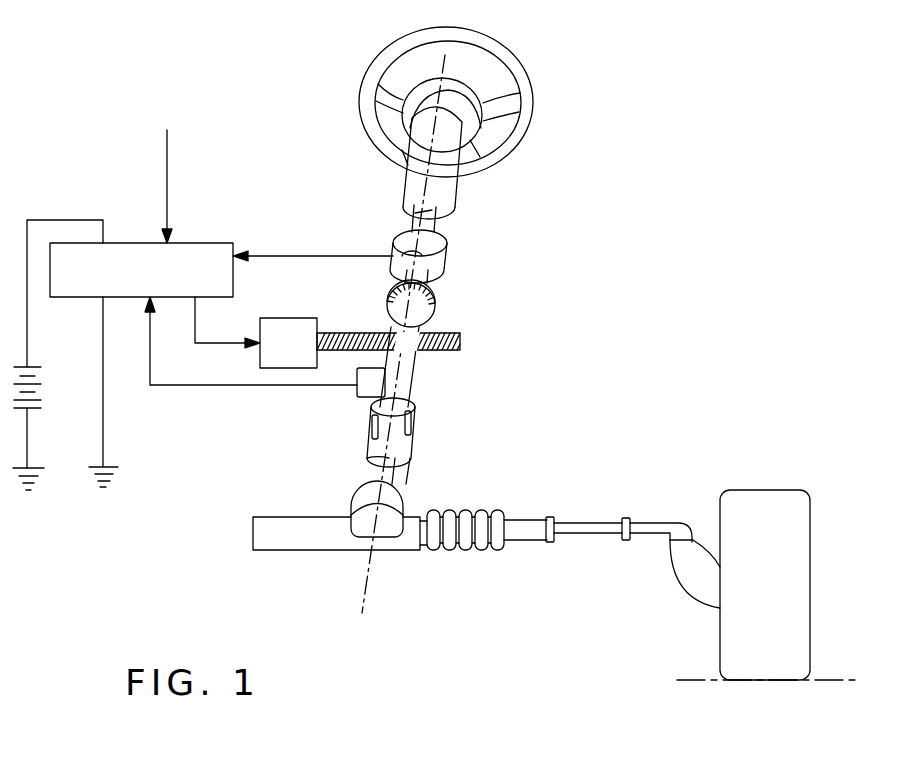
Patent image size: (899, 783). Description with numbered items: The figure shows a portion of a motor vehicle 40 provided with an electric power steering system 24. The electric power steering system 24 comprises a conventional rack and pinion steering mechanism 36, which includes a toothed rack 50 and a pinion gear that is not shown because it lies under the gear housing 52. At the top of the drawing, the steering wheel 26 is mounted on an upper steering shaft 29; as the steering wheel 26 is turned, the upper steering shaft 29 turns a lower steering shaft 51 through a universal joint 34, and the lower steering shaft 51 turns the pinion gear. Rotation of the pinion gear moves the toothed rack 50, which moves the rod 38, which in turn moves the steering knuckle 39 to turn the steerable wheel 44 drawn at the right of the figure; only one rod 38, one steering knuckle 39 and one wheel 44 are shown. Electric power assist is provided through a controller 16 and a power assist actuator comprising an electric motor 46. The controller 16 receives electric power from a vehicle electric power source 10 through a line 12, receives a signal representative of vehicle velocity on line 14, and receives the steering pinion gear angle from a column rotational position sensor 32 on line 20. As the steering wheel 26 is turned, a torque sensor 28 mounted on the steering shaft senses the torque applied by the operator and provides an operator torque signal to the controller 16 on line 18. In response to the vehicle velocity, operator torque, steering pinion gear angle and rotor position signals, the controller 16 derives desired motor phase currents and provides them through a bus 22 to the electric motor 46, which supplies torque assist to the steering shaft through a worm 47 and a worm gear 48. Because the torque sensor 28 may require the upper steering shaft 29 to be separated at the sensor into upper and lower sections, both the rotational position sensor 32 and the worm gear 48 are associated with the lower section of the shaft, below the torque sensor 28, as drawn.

The vehicle electric power source 10 is at (35, 365).
The line 12 is at (45, 220).
The line 14 is at (167, 170).
The controller 16 is at (135, 252).
The line 18 is at (293, 253).
The line 20 is at (165, 388).
The bus 22 is at (210, 345).
The electric power steering system 24 is at (605, 229).
The steering wheel 26 is at (497, 53).
The torque sensor 28 is at (396, 238).
The upper steering shaft 29 is at (428, 203).
The column rotational position sensor 32 is at (358, 398).
The universal joint 34 is at (415, 426).
The rack and pinion steering mechanism 36 is at (466, 551).
The rod 38 is at (583, 530).
The steering knuckle 39 is at (702, 585).
The motor vehicle 40 is at (680, 360).
The steerable wheel 44 is at (757, 670).
The electric motor 46 is at (283, 318).
The worm 47 is at (462, 341).
The worm gear 48 is at (430, 300).
The toothed rack 50 is at (302, 543).
The lower steering shaft 51 is at (396, 476).
The gear housing 52 is at (360, 497).